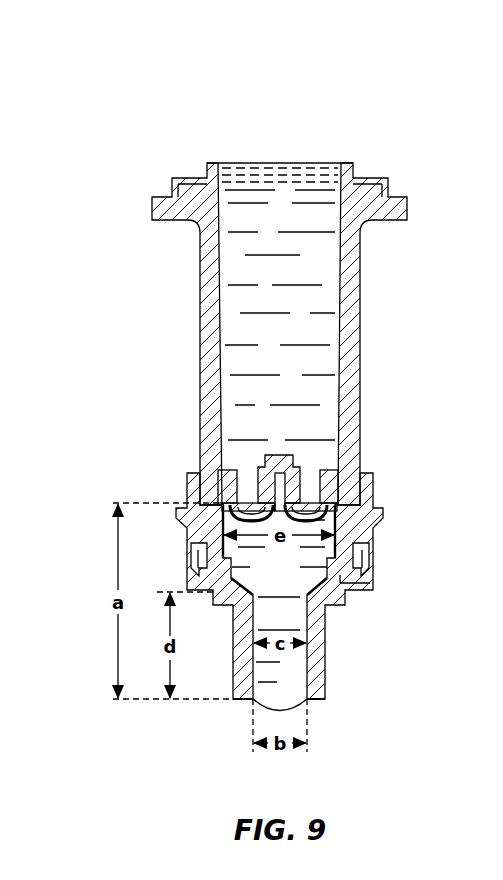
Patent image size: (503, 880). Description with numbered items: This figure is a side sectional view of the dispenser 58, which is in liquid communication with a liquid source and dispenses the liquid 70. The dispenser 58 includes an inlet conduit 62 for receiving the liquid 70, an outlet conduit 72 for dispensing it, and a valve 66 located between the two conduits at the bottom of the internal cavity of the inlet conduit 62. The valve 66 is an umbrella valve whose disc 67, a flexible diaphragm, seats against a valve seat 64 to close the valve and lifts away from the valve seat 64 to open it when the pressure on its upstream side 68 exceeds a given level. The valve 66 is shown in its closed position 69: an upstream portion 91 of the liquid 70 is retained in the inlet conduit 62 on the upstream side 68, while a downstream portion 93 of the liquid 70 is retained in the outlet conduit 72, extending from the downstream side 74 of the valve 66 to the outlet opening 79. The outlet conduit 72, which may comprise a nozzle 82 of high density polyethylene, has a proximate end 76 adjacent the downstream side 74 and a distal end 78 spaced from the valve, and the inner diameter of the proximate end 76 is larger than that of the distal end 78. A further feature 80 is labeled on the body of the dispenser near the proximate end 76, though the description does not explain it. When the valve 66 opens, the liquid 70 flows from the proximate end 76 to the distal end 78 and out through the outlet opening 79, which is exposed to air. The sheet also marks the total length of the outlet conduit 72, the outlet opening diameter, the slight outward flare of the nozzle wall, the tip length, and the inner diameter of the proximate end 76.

The dispenser 58 is at (340, 128).
The liquid 70 is at (266, 232).
The upstream portion of the liquid 91 is at (253, 298).
The inlet conduit 62 is at (304, 332).
The upstream side 68 is at (313, 498).
The valve 66 is at (265, 452).
The closed position 69 is at (250, 495).
The valve seat 64 is at (345, 462).
The proximate end 76 is at (362, 478).
The downstream side 74 is at (365, 519).
The disc 67 is at (222, 528).
The locking lug 80 is at (363, 546).
The downstream portion of the liquid 93 is at (372, 583).
The outlet conduit 72 is at (300, 557).
The nozzle 82 is at (318, 660).
The distal end 78 is at (313, 702).
The outlet opening 79 is at (307, 700).